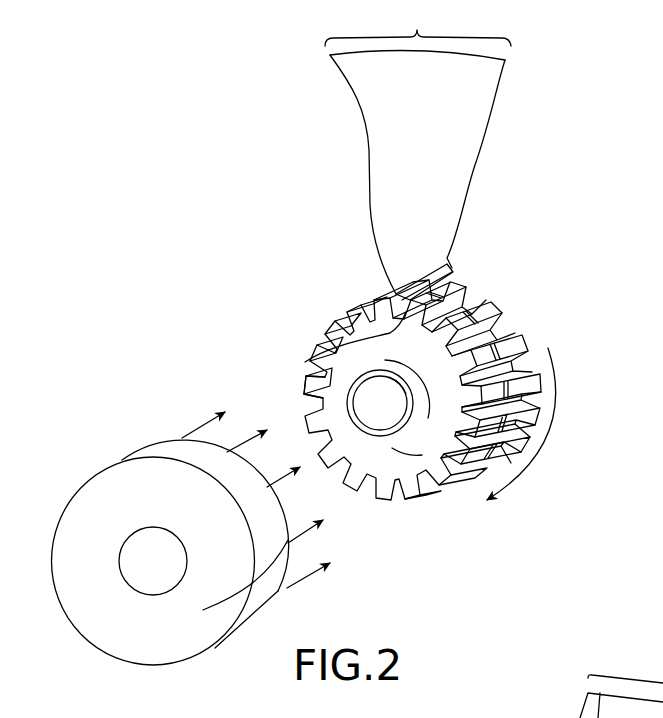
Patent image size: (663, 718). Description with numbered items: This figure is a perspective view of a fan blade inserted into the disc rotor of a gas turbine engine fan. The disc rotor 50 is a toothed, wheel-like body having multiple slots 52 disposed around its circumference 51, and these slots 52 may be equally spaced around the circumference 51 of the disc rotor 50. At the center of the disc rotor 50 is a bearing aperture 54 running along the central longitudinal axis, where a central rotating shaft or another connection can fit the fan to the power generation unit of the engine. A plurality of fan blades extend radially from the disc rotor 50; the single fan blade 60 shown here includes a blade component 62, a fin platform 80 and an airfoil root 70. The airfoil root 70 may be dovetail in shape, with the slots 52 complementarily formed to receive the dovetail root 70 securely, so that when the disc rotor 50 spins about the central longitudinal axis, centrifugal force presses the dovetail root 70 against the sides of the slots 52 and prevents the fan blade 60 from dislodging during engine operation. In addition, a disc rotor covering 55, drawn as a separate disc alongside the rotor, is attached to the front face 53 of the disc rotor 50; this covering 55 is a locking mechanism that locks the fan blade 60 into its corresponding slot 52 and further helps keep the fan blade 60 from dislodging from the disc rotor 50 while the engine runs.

The disc rotor 50 is at (520, 338).
The circumference 51 is at (550, 433).
The slots 52 is at (503, 353).
The front face 53 is at (408, 453).
The bearing aperture 54 is at (383, 402).
The disc rotor covering 55 is at (135, 487).
The fan blade 60 is at (497, 152).
The blade component 62 is at (418, 25).
The airfoil root 70 is at (305, 362).
The fin platform 80 is at (450, 270).